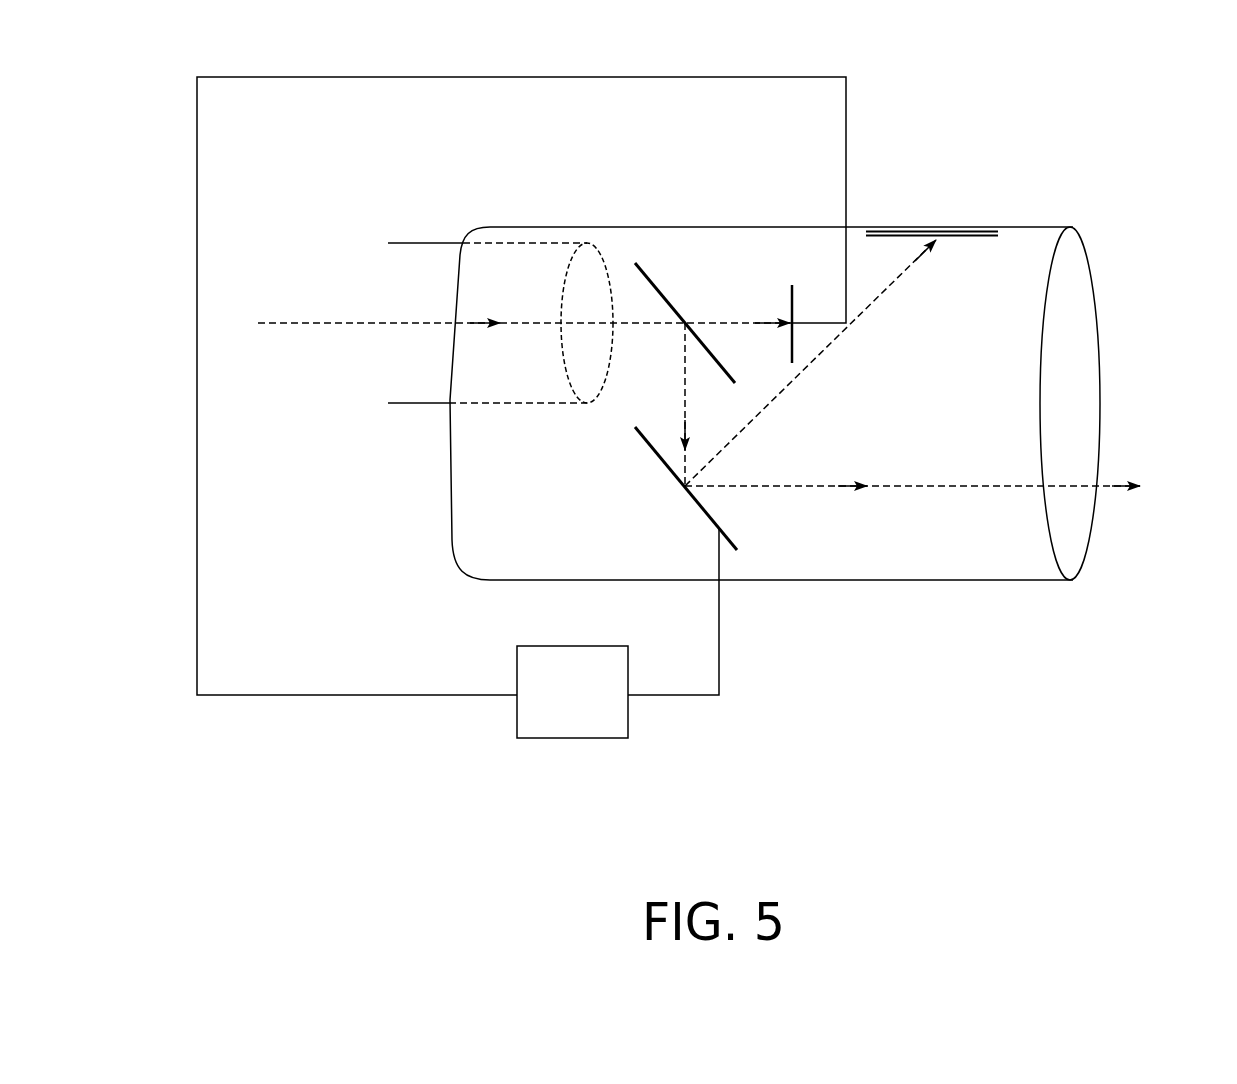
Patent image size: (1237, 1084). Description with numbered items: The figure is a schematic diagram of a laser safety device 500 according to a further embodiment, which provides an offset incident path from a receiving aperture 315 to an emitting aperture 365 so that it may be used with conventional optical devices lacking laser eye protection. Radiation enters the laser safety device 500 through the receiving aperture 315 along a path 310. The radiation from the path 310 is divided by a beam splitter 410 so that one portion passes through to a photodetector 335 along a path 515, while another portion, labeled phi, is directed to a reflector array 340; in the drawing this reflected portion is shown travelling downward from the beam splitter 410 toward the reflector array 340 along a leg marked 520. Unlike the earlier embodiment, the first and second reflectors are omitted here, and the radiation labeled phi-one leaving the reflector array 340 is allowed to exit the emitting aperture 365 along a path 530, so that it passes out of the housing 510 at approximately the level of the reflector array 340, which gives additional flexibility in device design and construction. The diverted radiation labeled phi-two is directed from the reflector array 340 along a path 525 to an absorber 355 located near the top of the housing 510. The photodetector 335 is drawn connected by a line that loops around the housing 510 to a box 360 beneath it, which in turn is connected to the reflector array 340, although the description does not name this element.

The laser safety device 500 is at (1110, 150).
The housing 510 is at (1025, 226).
The emitting aperture 365 is at (1078, 303).
The absorber 355 is at (925, 231).
The path 310 is at (318, 322).
The receiving aperture 315 is at (427, 243).
The beam splitter 410 is at (650, 281).
The path 515 is at (745, 323).
The photodetector 335 is at (795, 320).
The reflected beam portion 520 is at (685, 400).
The path 525 is at (828, 347).
The path 530 is at (878, 488).
The reflector array 340 is at (690, 497).
The controller 360 is at (568, 740).